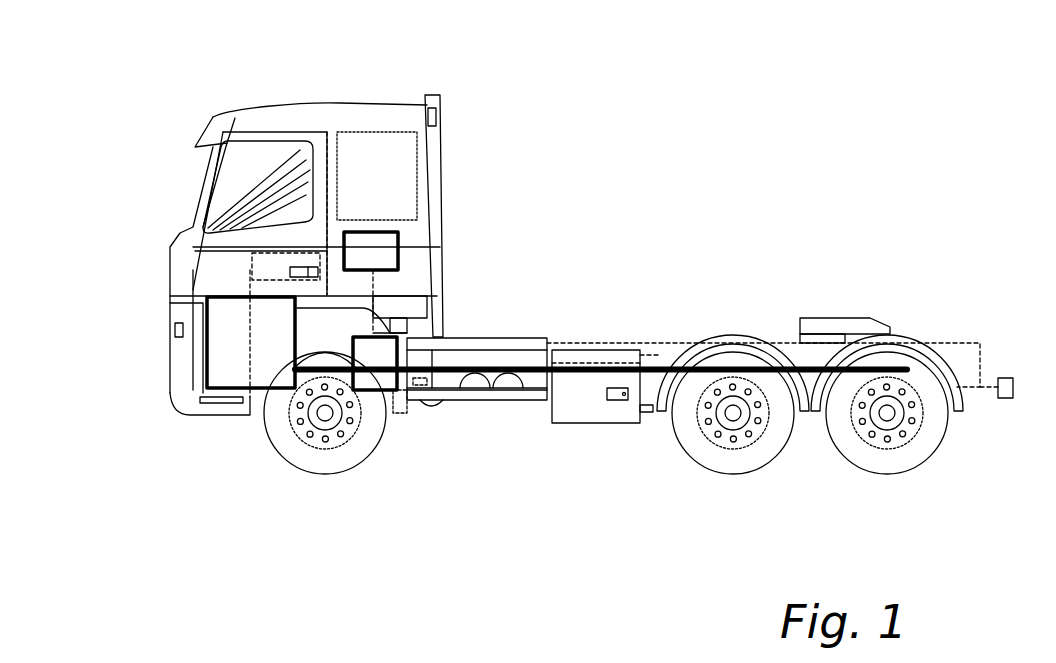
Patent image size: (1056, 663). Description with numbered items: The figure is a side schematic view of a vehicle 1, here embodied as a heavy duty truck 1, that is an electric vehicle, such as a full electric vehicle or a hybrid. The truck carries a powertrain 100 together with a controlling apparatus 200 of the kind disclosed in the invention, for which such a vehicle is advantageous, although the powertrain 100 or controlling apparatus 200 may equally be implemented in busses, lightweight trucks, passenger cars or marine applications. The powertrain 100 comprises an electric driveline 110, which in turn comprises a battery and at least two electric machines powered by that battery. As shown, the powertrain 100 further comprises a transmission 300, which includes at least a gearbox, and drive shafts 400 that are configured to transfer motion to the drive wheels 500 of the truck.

The vehicle 1 is at (215, 99).
The powertrain 100 is at (600, 222).
The electric driveline 110 is at (220, 388).
The controlling apparatus 200 is at (387, 253).
The transmission 300 is at (382, 378).
The drive shafts 400 is at (653, 362).
The drive wheels 500 is at (745, 445).